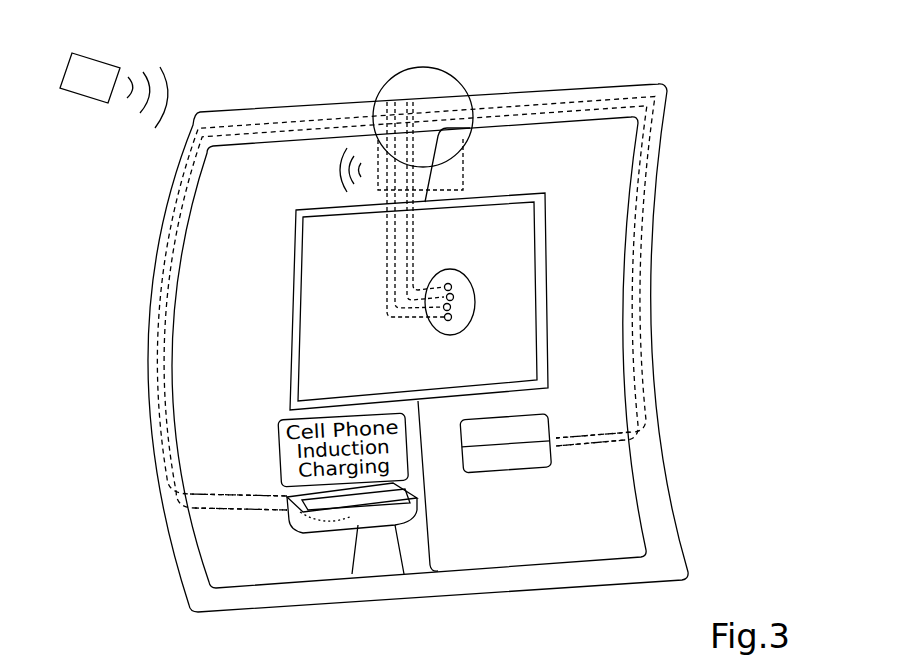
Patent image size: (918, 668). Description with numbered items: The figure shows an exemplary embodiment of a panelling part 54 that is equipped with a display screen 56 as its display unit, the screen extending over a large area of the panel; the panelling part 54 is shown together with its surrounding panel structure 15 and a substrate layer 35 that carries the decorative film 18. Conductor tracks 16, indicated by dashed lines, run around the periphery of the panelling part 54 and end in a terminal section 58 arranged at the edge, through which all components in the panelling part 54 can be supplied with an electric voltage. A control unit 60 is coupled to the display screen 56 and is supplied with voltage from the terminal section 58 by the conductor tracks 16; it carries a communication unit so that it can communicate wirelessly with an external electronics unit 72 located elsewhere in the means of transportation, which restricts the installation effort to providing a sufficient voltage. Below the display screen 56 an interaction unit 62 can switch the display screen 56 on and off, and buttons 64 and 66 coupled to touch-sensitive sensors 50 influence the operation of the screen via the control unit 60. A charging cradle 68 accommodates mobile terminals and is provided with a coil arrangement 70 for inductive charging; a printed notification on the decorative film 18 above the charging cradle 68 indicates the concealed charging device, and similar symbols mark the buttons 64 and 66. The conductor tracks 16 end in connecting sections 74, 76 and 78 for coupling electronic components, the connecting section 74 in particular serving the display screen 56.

The door trim panel 15 is at (661, 199).
The conductor tracks 16 is at (165, 342).
The decorative film 18 is at (612, 157).
The substrate layer 35 is at (640, 346).
The touch-sensitive sensors 50 is at (560, 417).
The panelling part 54 is at (580, 70).
The display screen 56 is at (317, 275).
The terminal section 58 is at (458, 72).
The control unit 60 is at (464, 163).
The interaction unit 62 is at (527, 485).
The button 64 is at (482, 474).
The button 66 is at (545, 470).
The charging cradle 68 is at (300, 527).
The coil arrangement 70 is at (363, 515).
The external electronics unit 72 is at (98, 93).
The connecting section 74 is at (447, 337).
The connecting section 76 is at (265, 488).
The connecting section 78 is at (587, 457).